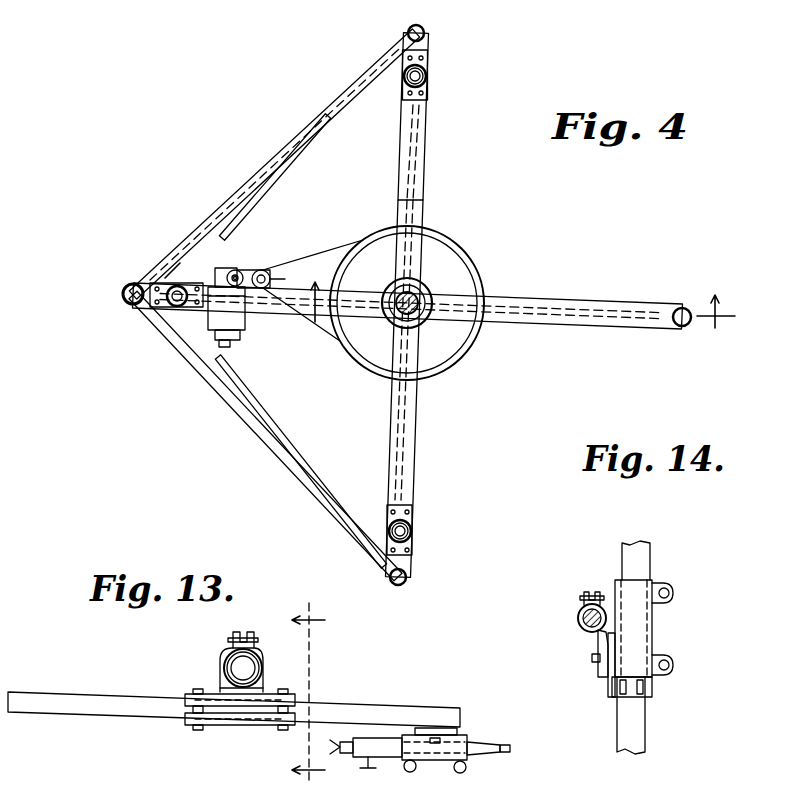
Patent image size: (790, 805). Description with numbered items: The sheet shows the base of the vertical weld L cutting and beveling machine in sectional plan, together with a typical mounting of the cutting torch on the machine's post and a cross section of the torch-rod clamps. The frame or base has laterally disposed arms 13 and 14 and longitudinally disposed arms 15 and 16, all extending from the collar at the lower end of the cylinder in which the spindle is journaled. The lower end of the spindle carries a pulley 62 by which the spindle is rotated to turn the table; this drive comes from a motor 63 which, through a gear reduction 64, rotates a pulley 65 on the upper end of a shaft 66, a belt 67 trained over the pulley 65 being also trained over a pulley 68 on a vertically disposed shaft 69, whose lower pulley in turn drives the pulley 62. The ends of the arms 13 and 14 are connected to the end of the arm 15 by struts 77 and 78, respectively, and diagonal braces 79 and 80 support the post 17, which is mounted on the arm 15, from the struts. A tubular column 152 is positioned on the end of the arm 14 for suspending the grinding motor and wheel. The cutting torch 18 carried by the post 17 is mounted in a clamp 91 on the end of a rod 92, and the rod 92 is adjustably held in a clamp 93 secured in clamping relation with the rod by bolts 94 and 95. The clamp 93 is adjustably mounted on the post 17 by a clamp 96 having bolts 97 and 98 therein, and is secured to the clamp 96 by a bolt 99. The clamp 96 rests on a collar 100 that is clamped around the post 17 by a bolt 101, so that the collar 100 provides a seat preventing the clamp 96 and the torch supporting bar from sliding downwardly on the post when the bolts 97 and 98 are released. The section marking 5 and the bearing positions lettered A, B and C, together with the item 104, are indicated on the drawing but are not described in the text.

In FIG. 4, the laterally disposed arm 13 is at (426, 150).
In FIG. 4, the laterally disposed arm 14 is at (413, 445).
In FIG. 13, the laterally disposed arm 14 is at (314, 694).
In FIG. 4, the longitudinally disposed arm 15 is at (292, 326).
In FIG. 4, the longitudinally disposed arm 16 is at (560, 300).
In FIG. 4, the post 17 is at (415, 315).
In FIG. 14, the post 17 is at (650, 555).
In FIG. 13, the cutting torch 18 is at (490, 745).
In FIG. 4, the pulley 62 is at (470, 268).
In FIG. 4, the motor 63 is at (210, 322).
In FIG. 4, the gear reduction 64 is at (207, 258).
In FIG. 4, the pulley 65 is at (236, 270).
In FIG. 4, the shaft 66 is at (246, 266).
In FIG. 4, the belt 67 is at (264, 269).
In FIG. 4, the pulley 68 is at (254, 300).
In FIG. 4, the vertically disposed shaft 69 is at (287, 278).
In FIG. 4, the strut 77 is at (345, 97).
In FIG. 4, the strut 78 is at (333, 516).
In FIG. 4, the diagonal brace 79 is at (282, 184).
In FIG. 4, the diagonal brace 80 is at (268, 405).
In FIG. 13, the clamp 91 is at (447, 765).
In FIG. 13, the rod 92 is at (362, 705).
In FIG. 14, the rod 92 is at (598, 645).
In FIG. 13, the clamp 93 is at (230, 727).
In FIG. 14, the clamp 93 is at (578, 620).
In FIG. 13, the bolt 94 is at (195, 731).
In FIG. 13, the bolt 95 is at (286, 731).
In FIG. 13, the clamp 96 is at (224, 660).
In FIG. 14, the clamp 96 is at (645, 632).
In FIG. 13, the bolt 97 is at (252, 640).
In FIG. 14, the bolt 97 is at (676, 594).
In FIG. 14, the bolt 98 is at (676, 666).
In FIG. 14, the bolt 99 is at (592, 665).
In FIG. 14, the collar 100 is at (610, 697).
In FIG. 14, the bolt 101 is at (652, 695).
In FIG. 4, the bearing 104 is at (428, 70).
In FIG. 4, the tubular column 152 is at (415, 527).
In FIG. 4, the section line 5 is at (523, 299).
In FIG. 4, the bearing A is at (180, 284).
In FIG. 13, the bearing A is at (223, 673).
In FIG. 14, the bearing A is at (645, 727).
In FIG. 4, the bearing B is at (428, 78).
In FIG. 4, the bearing C is at (386, 527).